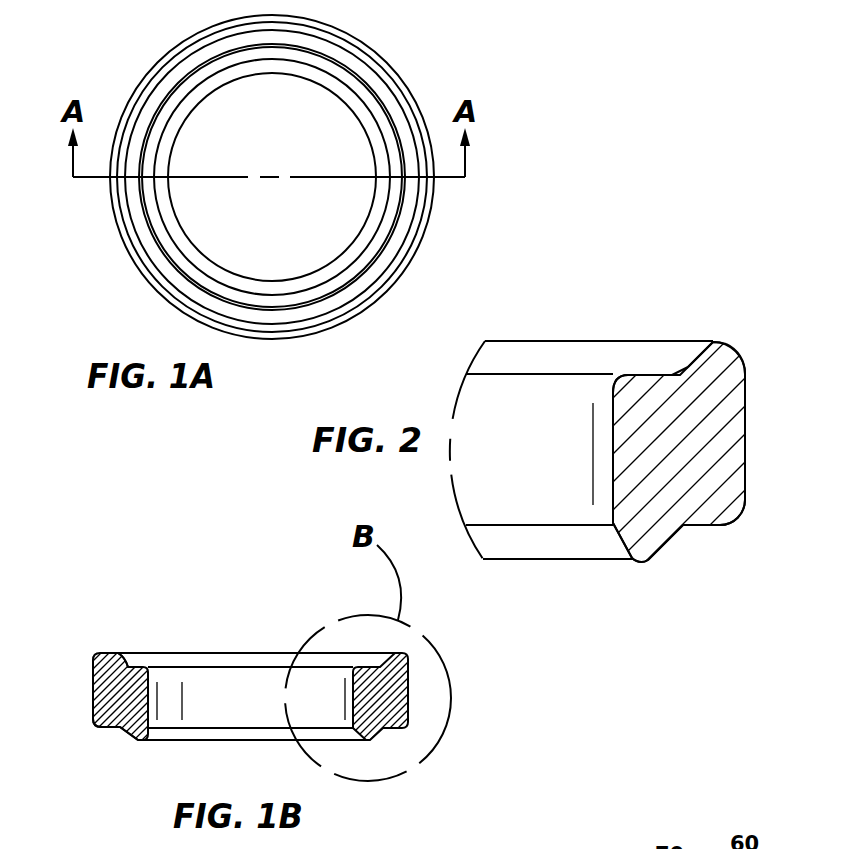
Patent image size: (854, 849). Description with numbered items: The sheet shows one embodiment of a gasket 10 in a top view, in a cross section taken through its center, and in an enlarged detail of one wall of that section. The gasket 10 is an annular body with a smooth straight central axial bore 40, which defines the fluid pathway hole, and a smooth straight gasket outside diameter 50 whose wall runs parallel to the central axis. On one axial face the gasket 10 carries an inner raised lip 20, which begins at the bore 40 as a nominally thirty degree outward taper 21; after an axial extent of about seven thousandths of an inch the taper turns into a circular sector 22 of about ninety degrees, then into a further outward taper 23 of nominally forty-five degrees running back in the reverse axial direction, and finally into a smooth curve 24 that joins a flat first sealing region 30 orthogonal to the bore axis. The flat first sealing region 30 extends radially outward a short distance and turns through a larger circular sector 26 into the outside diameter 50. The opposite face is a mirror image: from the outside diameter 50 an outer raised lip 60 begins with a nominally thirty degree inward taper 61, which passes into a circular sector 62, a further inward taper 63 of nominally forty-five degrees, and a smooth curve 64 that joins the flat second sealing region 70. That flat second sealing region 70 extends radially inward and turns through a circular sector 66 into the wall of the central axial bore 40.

In FIG. 1A, the gasket 10 is at (402, 68).
In FIG. 1B, the gasket 10 is at (248, 712).
In FIG. 2, the gasket 10 is at (512, 460).
In FIG. 1B, the inner raised lip 20 is at (138, 742).
In FIG. 2, the outward taper 21 is at (613, 540).
In FIG. 2, the circular sector 22 is at (643, 560).
In FIG. 2, the further outward taper 23 is at (658, 548).
In FIG. 2, the smooth curve 24 is at (682, 525).
In FIG. 2, the circular sector 26 is at (742, 518).
In FIG. 1B, the flat first sealing region 30 is at (112, 730).
In FIG. 2, the flat first sealing region 30 is at (703, 525).
In FIG. 1B, the central axial bore 40 is at (202, 680).
In FIG. 2, the central axial bore 40 is at (547, 488).
In FIG. 1B, the gasket outside diameter 50 is at (93, 693).
In FIG. 2, the gasket outside diameter 50 is at (747, 447).
In FIG. 1B, the outer raised lip 60 is at (107, 653).
In FIG. 2, the inward taper 61 is at (740, 353).
In FIG. 2, the circular sector 62 is at (717, 342).
In FIG. 2, the further inward taper 63 is at (693, 353).
In FIG. 2, the smooth curve 64 is at (680, 375).
In FIG. 2, the circular sector 66 is at (622, 382).
In FIG. 1B, the flat second sealing region 70 is at (130, 667).
In FIG. 2, the flat second sealing region 70 is at (653, 373).